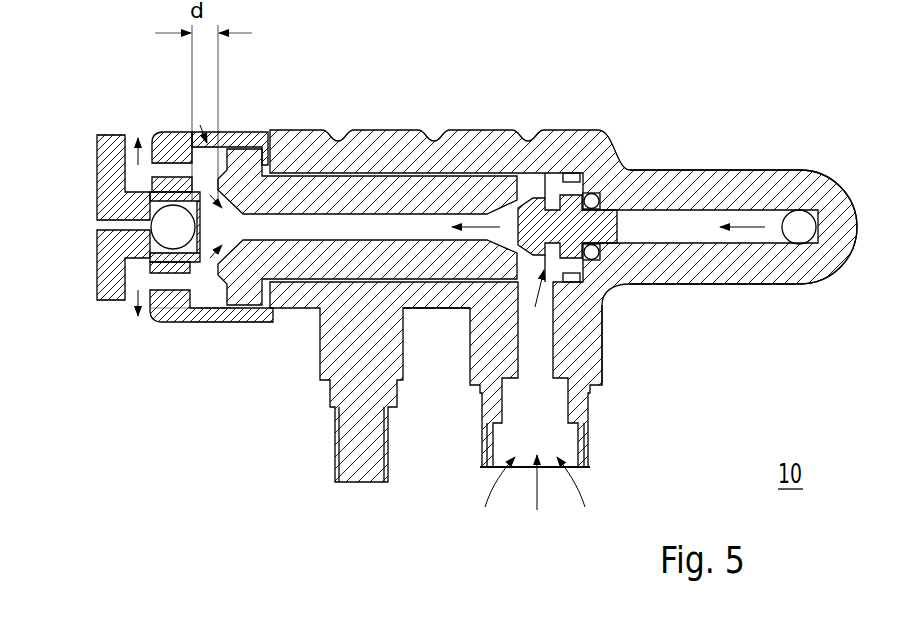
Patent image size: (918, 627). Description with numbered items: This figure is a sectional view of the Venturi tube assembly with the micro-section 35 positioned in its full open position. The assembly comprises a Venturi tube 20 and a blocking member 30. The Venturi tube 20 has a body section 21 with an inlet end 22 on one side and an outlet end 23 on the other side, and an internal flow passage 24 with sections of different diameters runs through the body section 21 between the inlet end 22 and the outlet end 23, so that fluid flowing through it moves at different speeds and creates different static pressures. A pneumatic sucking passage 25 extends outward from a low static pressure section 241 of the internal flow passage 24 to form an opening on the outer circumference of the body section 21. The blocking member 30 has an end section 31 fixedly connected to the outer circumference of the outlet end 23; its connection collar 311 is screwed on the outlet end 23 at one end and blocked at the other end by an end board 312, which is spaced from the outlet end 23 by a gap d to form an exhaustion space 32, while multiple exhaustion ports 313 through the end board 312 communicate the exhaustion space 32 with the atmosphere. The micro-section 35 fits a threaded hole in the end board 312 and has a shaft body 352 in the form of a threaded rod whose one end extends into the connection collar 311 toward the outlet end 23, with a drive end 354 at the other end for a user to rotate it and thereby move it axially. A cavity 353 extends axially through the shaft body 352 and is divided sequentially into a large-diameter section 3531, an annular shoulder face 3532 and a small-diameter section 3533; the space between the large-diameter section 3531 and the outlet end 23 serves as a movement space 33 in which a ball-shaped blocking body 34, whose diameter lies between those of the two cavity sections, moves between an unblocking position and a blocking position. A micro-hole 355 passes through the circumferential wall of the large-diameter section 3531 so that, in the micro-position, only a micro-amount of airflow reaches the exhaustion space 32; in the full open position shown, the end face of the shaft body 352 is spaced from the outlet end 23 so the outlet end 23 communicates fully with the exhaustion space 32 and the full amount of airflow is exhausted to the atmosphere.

The Venturi tube 20 is at (511, 95).
The body section 21 is at (575, 150).
The inlet end 22 is at (782, 213).
The outlet end 23 is at (222, 207).
The internal flow passage 24 is at (418, 227).
The low static pressure section 241 is at (470, 308).
The pneumatic sucking passage 25 is at (538, 350).
The blocking member 30 is at (156, 128).
The end section 31 is at (268, 131).
The exhaustion space 32 is at (204, 150).
The movement space 33 is at (207, 323).
The ball-shaped blocking body 34 is at (176, 245).
The micro-section 35 is at (96, 201).
The connection collar 311 is at (192, 323).
The end board 312 is at (164, 316).
The exhaustion ports 313 is at (218, 323).
The shaft body 352 is at (157, 170).
The cavity 353 is at (153, 487).
The drive end 354 is at (112, 158).
The micro-hole 355 is at (185, 192).
The large-diameter section 3531 is at (156, 310).
The annular shoulder face 3532 is at (110, 263).
The small-diameter section 3533 is at (98, 226).